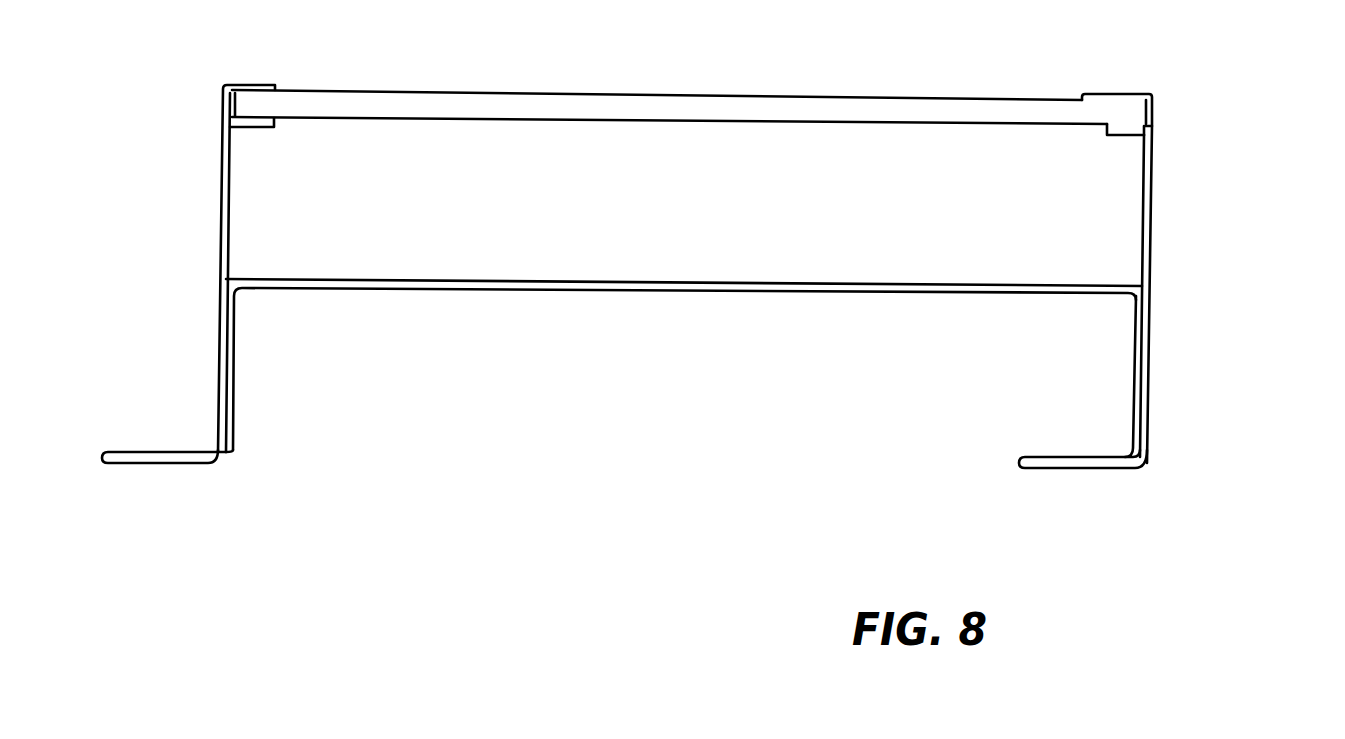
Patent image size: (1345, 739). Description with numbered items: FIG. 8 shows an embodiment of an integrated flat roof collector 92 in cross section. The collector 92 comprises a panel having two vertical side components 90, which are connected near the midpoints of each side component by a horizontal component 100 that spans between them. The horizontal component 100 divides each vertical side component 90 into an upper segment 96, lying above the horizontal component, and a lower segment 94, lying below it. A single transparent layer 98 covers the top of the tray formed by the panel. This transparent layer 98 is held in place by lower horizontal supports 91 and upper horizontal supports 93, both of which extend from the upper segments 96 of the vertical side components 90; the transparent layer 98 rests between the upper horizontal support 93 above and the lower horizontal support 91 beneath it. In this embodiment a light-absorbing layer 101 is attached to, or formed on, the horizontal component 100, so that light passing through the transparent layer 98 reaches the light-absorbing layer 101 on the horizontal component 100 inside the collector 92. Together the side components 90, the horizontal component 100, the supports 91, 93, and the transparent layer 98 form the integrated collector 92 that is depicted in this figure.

The vertical side component 90 is at (1277, 98).
The lower horizontal support 91 is at (1114, 138).
The integrated flat roof collector 92 is at (1208, 517).
The upper horizontal support 93 is at (1127, 93).
The lower segment 94 is at (1157, 361).
The upper segment 96 is at (1153, 210).
The transparent layer 98 is at (800, 96).
The horizontal component 100 is at (780, 283).
The light-absorbing layer 101 is at (562, 279).